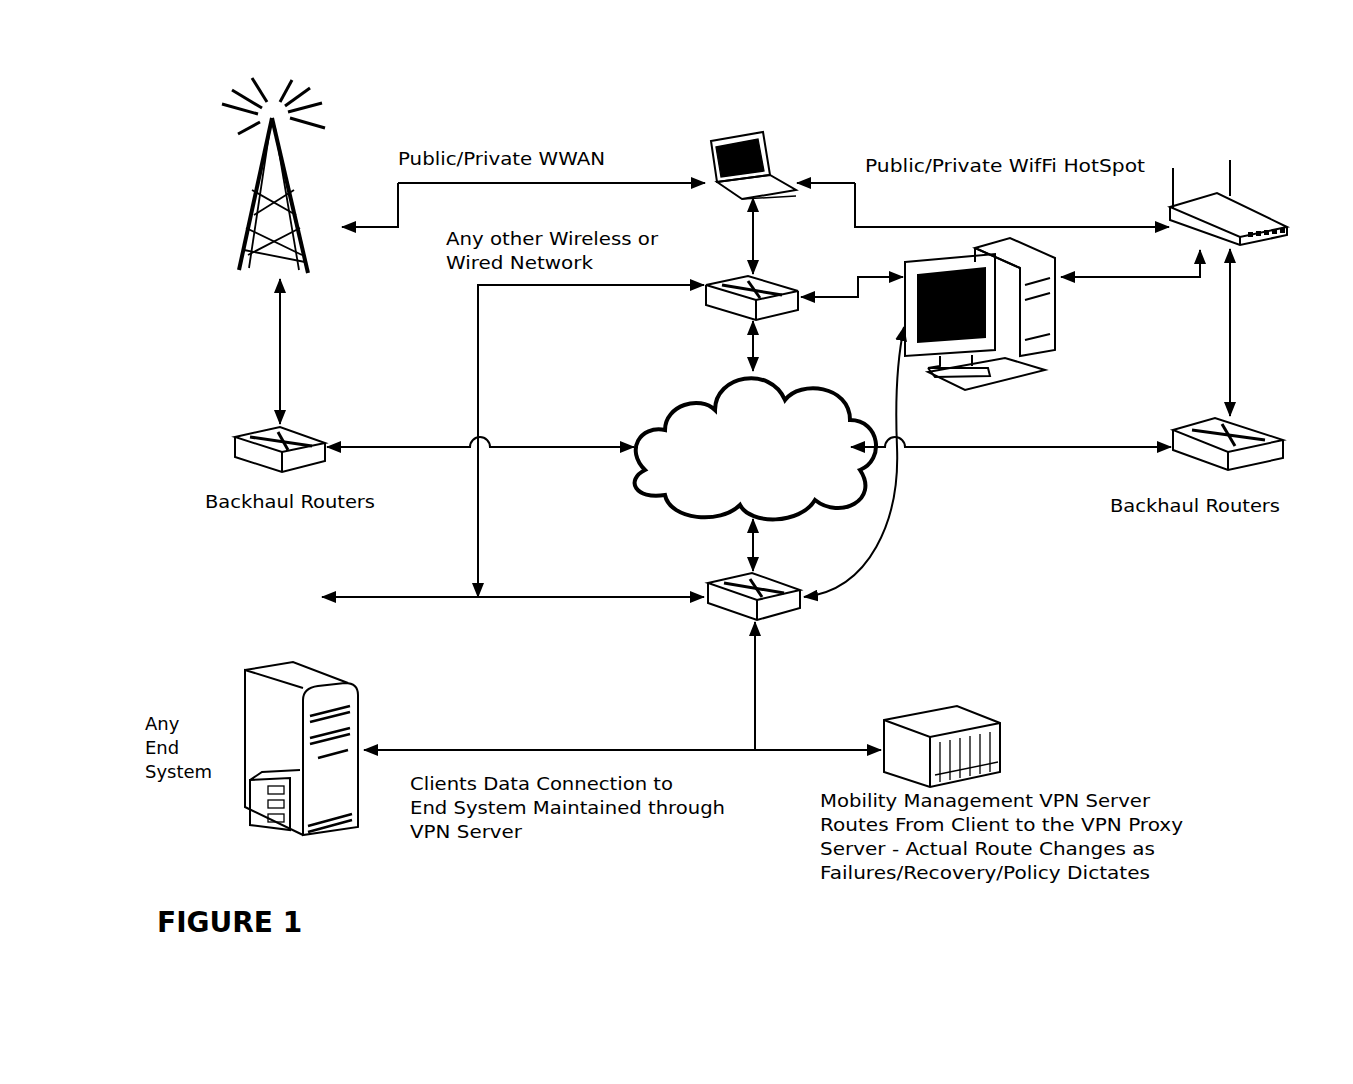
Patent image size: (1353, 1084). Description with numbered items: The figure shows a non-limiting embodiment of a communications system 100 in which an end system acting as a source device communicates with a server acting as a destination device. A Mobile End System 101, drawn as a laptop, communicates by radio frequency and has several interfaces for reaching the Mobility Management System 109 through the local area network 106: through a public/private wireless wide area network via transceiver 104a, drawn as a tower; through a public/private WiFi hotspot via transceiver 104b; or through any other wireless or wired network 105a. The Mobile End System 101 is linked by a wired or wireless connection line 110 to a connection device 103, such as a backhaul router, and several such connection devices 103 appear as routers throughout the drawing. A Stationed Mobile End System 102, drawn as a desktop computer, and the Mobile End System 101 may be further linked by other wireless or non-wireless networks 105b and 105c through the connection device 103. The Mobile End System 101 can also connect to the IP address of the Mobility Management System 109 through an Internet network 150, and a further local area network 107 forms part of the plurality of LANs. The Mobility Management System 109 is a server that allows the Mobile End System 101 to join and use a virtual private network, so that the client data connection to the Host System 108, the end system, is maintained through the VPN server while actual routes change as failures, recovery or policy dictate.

The communications system 100 is at (1013, 578).
The mobile end system 101 is at (800, 160).
The stationed mobile end system 102 is at (1058, 322).
The connection device 103 is at (759, 464).
The transceiver 104a is at (288, 175).
The transceiver 104b is at (1174, 208).
The other wireless or wired network 105a is at (591, 441).
The other wireless or non-wireless network 105b is at (852, 277).
The other wireless or non-wireless network 105c is at (878, 462).
The local area network 106 is at (622, 686).
The local area network 107 is at (513, 579).
The host system 108 is at (337, 748).
The mobility management system 109 is at (1005, 750).
The connection line 110 is at (729, 236).
The network 150 is at (755, 448).